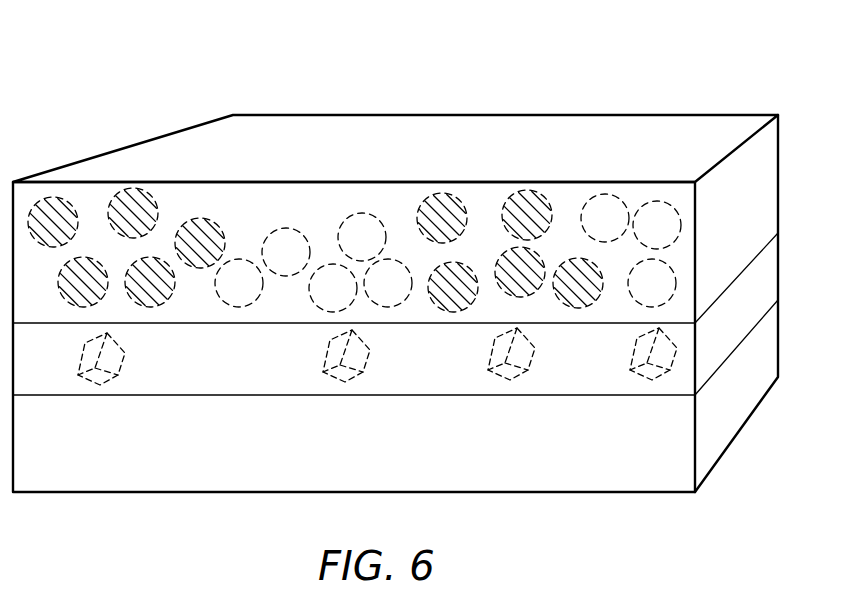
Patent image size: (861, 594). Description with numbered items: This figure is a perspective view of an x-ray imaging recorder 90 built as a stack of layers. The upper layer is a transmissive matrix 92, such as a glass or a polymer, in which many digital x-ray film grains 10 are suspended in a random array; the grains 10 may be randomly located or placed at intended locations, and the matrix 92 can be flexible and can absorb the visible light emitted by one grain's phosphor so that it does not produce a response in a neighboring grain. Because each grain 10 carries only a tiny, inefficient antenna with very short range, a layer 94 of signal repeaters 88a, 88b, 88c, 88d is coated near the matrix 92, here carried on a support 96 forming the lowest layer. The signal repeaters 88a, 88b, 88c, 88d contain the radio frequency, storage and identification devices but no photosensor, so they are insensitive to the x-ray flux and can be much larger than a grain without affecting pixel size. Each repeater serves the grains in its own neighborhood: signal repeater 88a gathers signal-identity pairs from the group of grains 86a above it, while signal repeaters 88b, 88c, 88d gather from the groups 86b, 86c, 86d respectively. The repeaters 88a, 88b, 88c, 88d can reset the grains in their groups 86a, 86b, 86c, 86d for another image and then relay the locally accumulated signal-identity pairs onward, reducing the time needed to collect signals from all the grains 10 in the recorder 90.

The x-ray imaging recorder 90 is at (158, 96).
The digital x-ray film grain 10 is at (152, 195).
The group of grains 86a is at (82, 193).
The group of grains 86b is at (322, 243).
The group of grains 86c is at (482, 212).
The group of grains 86d is at (633, 210).
The signal repeater 88a is at (98, 383).
The signal repeater 88b is at (340, 380).
The signal repeater 88c is at (503, 382).
The signal repeater 88d is at (648, 383).
The matrix 92 is at (765, 183).
The layer of signal repeaters 94 is at (770, 270).
The support 96 is at (770, 345).